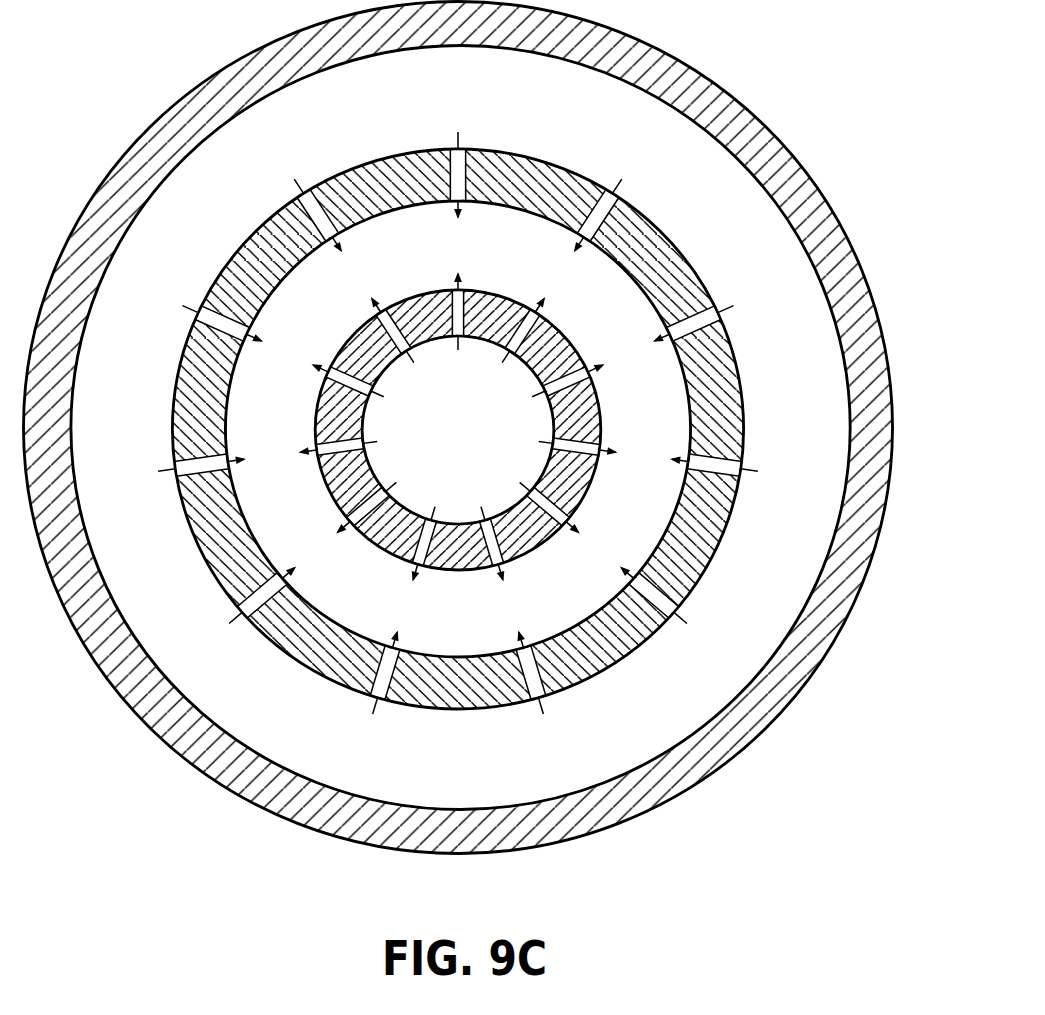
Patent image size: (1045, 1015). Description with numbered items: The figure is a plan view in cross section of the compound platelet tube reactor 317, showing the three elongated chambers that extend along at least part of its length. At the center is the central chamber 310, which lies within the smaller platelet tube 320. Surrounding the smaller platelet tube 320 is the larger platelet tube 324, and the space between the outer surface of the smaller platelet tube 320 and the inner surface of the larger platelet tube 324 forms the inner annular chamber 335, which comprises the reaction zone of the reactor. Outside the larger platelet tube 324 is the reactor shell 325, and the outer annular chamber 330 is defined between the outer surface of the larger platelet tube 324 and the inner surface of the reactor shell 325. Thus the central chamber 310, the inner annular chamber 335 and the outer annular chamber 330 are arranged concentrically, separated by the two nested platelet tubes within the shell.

The compound platelet tube reactor 317 is at (221, 47).
The reactor shell 325 is at (843, 233).
The outer annular chamber 330 is at (813, 422).
The larger platelet tube 324 is at (696, 272).
The inner annular chamber 335 is at (663, 422).
The smaller platelet tube 320 is at (552, 326).
The central chamber 310 is at (475, 428).